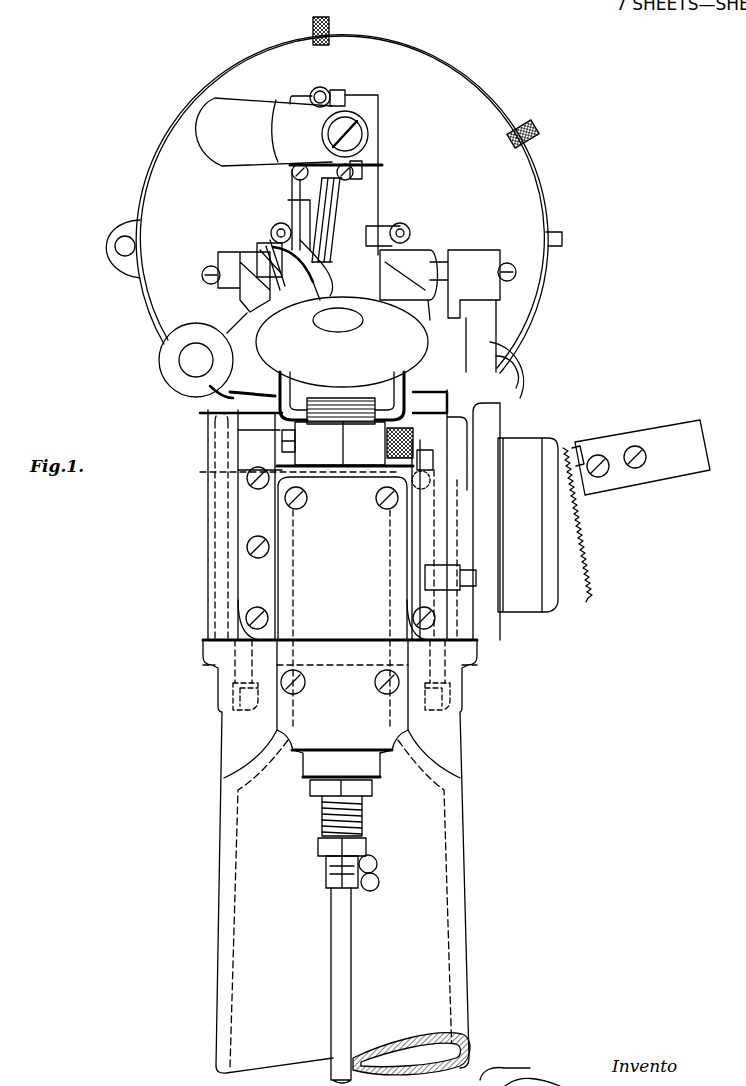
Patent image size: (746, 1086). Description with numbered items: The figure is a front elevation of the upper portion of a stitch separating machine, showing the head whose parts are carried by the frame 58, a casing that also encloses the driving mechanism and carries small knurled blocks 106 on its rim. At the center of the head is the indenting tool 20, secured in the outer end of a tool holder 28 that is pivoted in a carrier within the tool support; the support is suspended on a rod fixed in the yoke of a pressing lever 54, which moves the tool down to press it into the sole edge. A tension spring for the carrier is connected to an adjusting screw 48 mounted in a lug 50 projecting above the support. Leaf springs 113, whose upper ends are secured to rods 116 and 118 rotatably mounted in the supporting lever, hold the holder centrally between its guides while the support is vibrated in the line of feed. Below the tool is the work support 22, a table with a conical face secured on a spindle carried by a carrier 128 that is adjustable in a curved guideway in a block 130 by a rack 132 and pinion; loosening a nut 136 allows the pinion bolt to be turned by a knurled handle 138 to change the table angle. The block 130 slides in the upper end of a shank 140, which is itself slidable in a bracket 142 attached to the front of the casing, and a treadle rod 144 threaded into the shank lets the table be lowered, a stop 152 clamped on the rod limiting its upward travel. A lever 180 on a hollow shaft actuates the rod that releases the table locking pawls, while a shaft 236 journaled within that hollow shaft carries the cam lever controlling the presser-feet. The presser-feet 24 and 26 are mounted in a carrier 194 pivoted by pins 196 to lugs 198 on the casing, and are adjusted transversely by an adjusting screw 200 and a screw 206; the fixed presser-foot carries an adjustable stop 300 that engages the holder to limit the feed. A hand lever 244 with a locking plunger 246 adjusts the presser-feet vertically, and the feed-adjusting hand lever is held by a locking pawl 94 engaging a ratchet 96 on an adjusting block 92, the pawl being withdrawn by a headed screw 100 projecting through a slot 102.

The indenting tool 20 is at (312, 288).
The work support 22 is at (410, 356).
The presser-foot 24 is at (258, 262).
The presser-foot 26 is at (390, 280).
The tool holder 28 is at (352, 208).
The adjusting screw 48 is at (318, 88).
The lug 50 is at (343, 92).
The pressing lever 54 is at (253, 112).
The frame 58 is at (468, 100).
The adjusting block 92 is at (572, 514).
The locking pawl 94 is at (578, 456).
The ratchet 96 is at (576, 534).
The headed screw 100 is at (638, 468).
The slot 102 is at (630, 446).
The knurled block 106 is at (330, 30).
The leaf springs 113 is at (362, 174).
The rod 116 is at (292, 180).
The rod 118 is at (362, 163).
The carrier 128 is at (280, 398).
The block 130 is at (368, 460).
The rack 132 is at (306, 435).
The nut 136 is at (280, 448).
The knurled handle 138 is at (462, 424).
The shank 140 is at (345, 475).
The bracket 142 is at (252, 578).
The treadle rod 144 is at (338, 988).
The stop 152 is at (326, 886).
The lever 180 is at (247, 378).
The presser-foot carrier 194 is at (478, 344).
The pins 196 is at (203, 275).
The lugs 198 is at (474, 252).
The adjusting screw 200 is at (277, 226).
The screw 206 is at (406, 226).
The shaft 236 is at (188, 366).
The hand lever 244 is at (422, 524).
The locking plunger 246 is at (506, 606).
The adjustable stop 300 is at (284, 290).